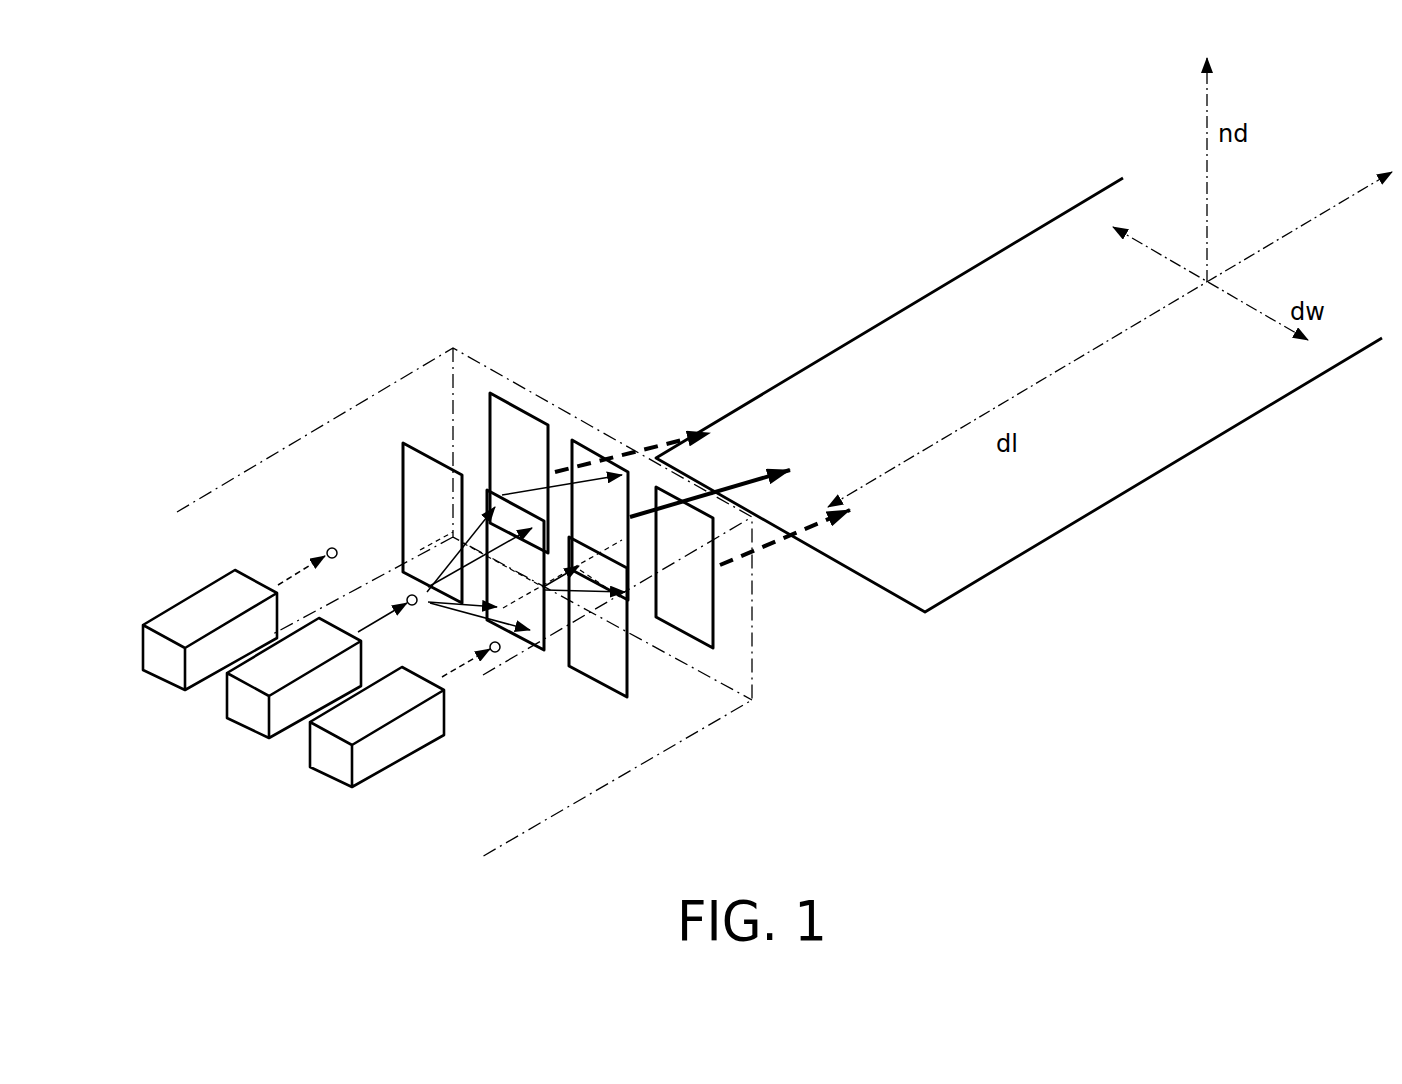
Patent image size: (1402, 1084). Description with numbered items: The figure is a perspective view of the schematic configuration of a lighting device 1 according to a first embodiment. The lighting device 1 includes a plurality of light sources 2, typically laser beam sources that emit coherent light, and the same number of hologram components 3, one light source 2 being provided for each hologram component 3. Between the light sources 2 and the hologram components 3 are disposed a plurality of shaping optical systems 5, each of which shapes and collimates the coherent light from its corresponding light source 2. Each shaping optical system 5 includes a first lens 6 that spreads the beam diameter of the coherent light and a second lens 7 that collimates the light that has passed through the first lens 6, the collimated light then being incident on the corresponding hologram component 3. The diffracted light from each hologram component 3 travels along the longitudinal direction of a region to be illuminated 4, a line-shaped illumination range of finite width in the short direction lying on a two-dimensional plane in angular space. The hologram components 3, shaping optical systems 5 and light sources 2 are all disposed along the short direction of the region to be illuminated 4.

The lighting device 1 is at (892, 754).
The light source 2 is at (397, 743).
The hologram component 3 is at (703, 612).
The region to be illuminated 4 is at (1072, 502).
The shaping optical system 5 is at (600, 671).
The first lens 6 is at (500, 648).
The second lens 7 is at (620, 670).